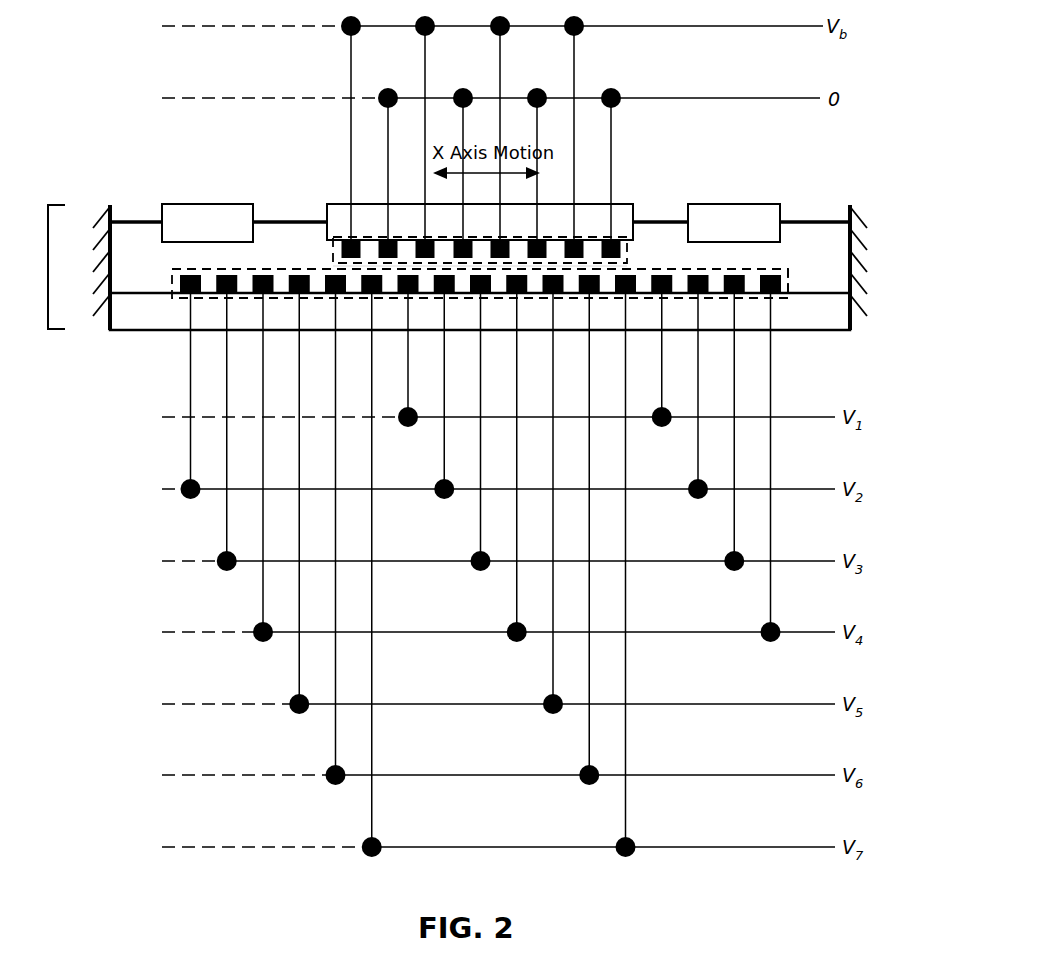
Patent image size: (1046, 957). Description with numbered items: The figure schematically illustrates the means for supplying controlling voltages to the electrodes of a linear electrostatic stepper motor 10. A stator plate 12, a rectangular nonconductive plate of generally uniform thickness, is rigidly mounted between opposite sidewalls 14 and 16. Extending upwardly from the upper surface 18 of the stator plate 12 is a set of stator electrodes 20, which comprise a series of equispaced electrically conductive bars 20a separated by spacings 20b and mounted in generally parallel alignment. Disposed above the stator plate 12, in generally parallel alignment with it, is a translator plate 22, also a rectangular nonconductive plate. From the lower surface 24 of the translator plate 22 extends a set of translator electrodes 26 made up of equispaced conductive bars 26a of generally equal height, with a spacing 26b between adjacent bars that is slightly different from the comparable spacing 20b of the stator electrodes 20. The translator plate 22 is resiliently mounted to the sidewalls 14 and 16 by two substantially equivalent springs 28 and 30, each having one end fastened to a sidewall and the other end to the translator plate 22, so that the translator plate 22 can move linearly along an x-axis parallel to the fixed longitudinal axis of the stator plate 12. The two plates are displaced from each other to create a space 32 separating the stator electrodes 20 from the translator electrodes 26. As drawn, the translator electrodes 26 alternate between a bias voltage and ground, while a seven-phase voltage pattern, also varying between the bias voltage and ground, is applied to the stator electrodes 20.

The linear electrostatic stepper motor 10 is at (48, 269).
The stator plate 12 is at (323, 318).
The sidewall 14 is at (98, 292).
The sidewall 16 is at (856, 292).
The upper surface 18 is at (790, 291).
The stator electrodes 20 is at (172, 290).
The electrically conductive bars 20a is at (771, 297).
The spacings 20b is at (680, 287).
The translator plate 22 is at (432, 232).
The lower surface 24 is at (333, 243).
The translator electrodes 26 is at (398, 238).
The conductive bars 26a is at (618, 238).
The spacing 26b is at (555, 244).
The spring 28 is at (205, 204).
The spring 30 is at (742, 204).
The space 32 is at (432, 265).